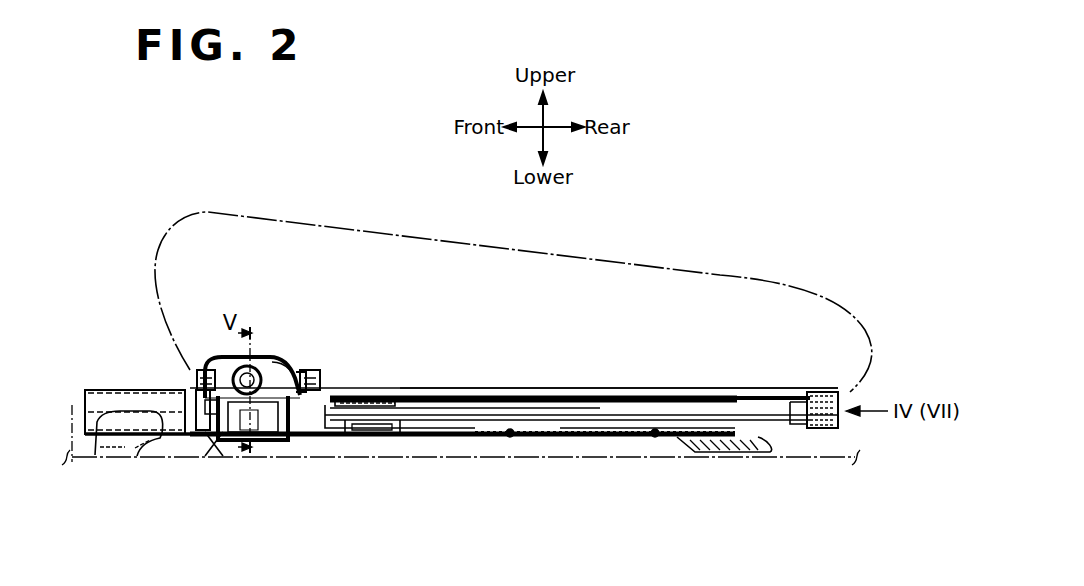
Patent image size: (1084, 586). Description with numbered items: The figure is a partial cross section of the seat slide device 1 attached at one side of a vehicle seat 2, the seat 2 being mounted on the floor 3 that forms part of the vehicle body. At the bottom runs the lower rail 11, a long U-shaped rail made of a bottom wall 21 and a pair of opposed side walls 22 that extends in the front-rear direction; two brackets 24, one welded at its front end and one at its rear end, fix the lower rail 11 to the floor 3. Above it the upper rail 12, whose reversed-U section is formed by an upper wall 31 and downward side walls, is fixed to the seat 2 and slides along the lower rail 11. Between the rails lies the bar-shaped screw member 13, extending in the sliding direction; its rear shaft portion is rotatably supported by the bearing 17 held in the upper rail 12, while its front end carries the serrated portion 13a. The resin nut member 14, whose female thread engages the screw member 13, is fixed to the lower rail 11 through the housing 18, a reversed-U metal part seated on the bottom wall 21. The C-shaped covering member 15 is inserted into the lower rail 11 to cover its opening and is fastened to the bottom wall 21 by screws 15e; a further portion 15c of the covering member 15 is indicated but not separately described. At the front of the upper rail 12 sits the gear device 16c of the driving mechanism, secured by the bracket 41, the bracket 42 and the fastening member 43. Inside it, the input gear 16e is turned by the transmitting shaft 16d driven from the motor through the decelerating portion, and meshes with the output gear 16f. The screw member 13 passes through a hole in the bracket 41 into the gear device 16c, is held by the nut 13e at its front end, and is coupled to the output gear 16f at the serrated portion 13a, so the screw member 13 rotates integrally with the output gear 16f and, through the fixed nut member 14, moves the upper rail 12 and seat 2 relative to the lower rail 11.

The seat slide device 1 is at (250, 258).
The seat 2 is at (730, 277).
The floor 3 is at (460, 425).
The lower rail 11 is at (619, 438).
The upper rail 12 is at (649, 388).
The screw member 13 is at (490, 405).
The serrated portion 13a is at (816, 398).
The nut 13e is at (215, 440).
The nut member 14 is at (388, 402).
The covering member 15 is at (527, 400).
The lever portion 15c is at (605, 419).
The screws 15e is at (511, 438).
The gear device 16c is at (257, 360).
The transmitting shaft 16d is at (278, 415).
The input gear 16e is at (272, 362).
The output gear 16f is at (253, 430).
The bearing 17 is at (802, 398).
The housing 18 is at (398, 436).
The bottom wall 21 is at (588, 438).
The side walls 22 is at (86, 393).
The brackets 24 is at (120, 452).
The upper wall 31 is at (570, 387).
The bracket 41 is at (283, 367).
The bracket 42 is at (240, 365).
The fastening member 43 is at (198, 372).